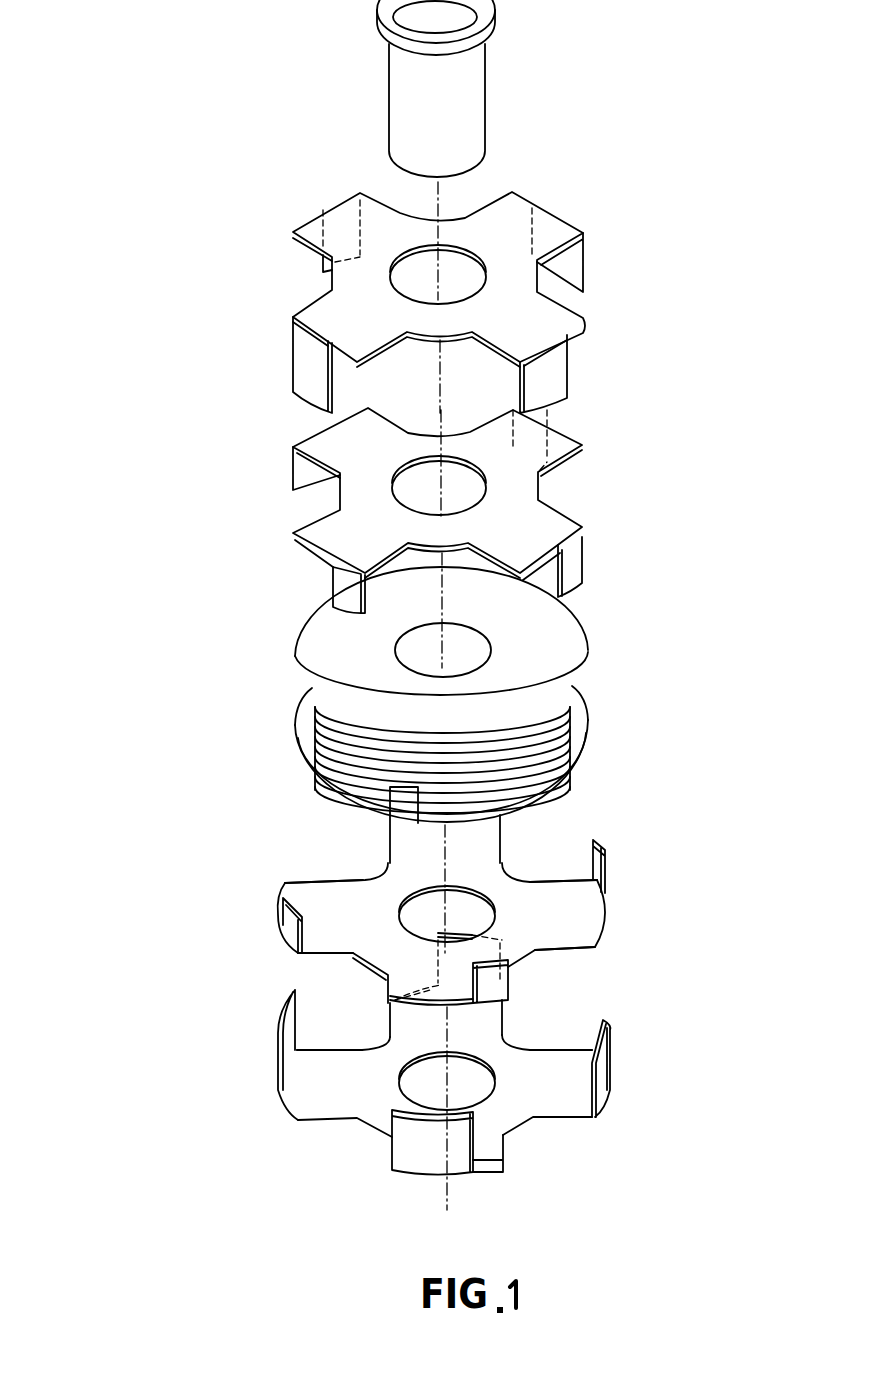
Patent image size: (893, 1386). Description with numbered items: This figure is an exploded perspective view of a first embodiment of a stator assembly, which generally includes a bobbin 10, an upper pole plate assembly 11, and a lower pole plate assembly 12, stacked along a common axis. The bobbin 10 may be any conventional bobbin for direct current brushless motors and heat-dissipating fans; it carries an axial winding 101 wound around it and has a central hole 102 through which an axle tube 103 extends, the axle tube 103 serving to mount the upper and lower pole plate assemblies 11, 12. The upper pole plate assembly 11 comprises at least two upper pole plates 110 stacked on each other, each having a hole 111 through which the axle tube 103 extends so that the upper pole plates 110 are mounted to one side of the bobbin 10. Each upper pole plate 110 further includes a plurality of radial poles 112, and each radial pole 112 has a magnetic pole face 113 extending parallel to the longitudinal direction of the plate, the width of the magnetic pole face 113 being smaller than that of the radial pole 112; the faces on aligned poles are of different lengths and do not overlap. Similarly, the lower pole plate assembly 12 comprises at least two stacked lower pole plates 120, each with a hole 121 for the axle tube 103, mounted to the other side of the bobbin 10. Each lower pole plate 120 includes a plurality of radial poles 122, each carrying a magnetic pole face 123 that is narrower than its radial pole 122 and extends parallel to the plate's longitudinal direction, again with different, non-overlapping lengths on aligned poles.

The bobbin 10 is at (308, 657).
The upper pole plate assembly 11 is at (742, 183).
The lower pole plate assembly 12 is at (735, 825).
The axial winding 101 is at (560, 723).
The central hole 102 is at (478, 648).
The axle tube 103 is at (477, 80).
The upper pole plate 110 is at (334, 302).
The hole 111 is at (423, 270).
The radial pole 112 is at (296, 320).
The magnetic pole face 113 is at (300, 370).
The lower pole plate 120 is at (358, 888).
The hole 121 is at (483, 918).
The radial pole 122 is at (278, 887).
The magnetic pole face 123 is at (293, 923).